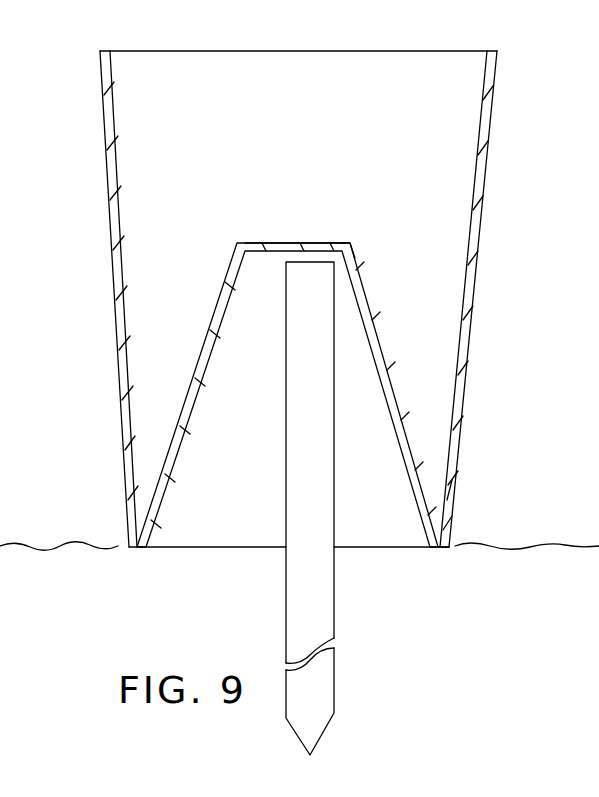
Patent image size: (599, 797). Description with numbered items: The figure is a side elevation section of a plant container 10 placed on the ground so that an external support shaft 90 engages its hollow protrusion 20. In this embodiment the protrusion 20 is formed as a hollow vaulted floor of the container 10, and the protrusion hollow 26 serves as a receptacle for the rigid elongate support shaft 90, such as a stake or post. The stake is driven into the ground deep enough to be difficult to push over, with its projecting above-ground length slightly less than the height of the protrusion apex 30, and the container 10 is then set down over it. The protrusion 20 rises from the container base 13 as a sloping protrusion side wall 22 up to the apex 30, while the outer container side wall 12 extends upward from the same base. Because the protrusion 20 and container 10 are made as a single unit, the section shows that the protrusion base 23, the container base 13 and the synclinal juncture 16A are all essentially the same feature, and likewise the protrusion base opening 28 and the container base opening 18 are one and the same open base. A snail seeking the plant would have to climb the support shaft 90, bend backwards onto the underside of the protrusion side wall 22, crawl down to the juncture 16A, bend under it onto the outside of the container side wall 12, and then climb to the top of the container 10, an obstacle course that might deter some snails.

The plant container 10 is at (131, 50).
The container side wall 12 is at (110, 226).
The container base 13 is at (445, 549).
The synclinal juncture 16A is at (452, 493).
The container base opening 18 is at (218, 548).
The protrusion 20 is at (330, 243).
The protrusion side wall 22 is at (378, 340).
The protrusion base 23 is at (445, 552).
The protrusion hollow 26 is at (170, 525).
The protrusion base opening 28 is at (216, 548).
The protrusion apex 30 is at (351, 243).
The support shaft 90 is at (322, 690).